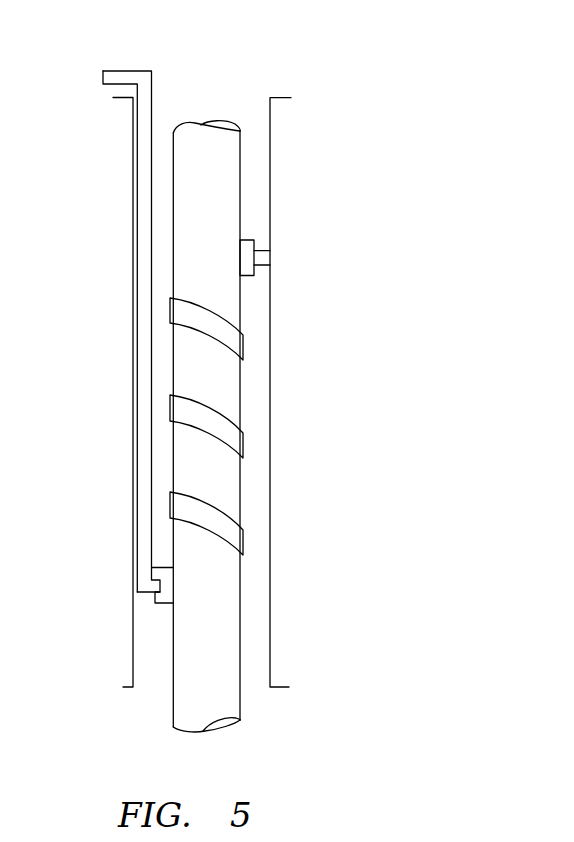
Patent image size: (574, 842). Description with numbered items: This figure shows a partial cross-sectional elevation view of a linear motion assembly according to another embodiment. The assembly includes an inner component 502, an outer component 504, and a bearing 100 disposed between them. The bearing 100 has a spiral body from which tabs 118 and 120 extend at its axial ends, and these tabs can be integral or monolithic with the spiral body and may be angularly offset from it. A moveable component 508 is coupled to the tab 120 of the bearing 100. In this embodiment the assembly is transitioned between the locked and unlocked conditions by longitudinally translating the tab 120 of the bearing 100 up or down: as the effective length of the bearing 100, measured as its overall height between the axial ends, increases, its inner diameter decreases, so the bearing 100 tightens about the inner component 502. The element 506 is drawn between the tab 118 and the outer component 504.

The bearing 100 is at (243, 542).
The tab 118 is at (247, 240).
The tab 120 is at (156, 599).
The inner component 502 is at (218, 733).
The outer component 504 is at (271, 450).
The fastener 506 is at (262, 266).
The moveable component 508 is at (125, 70).